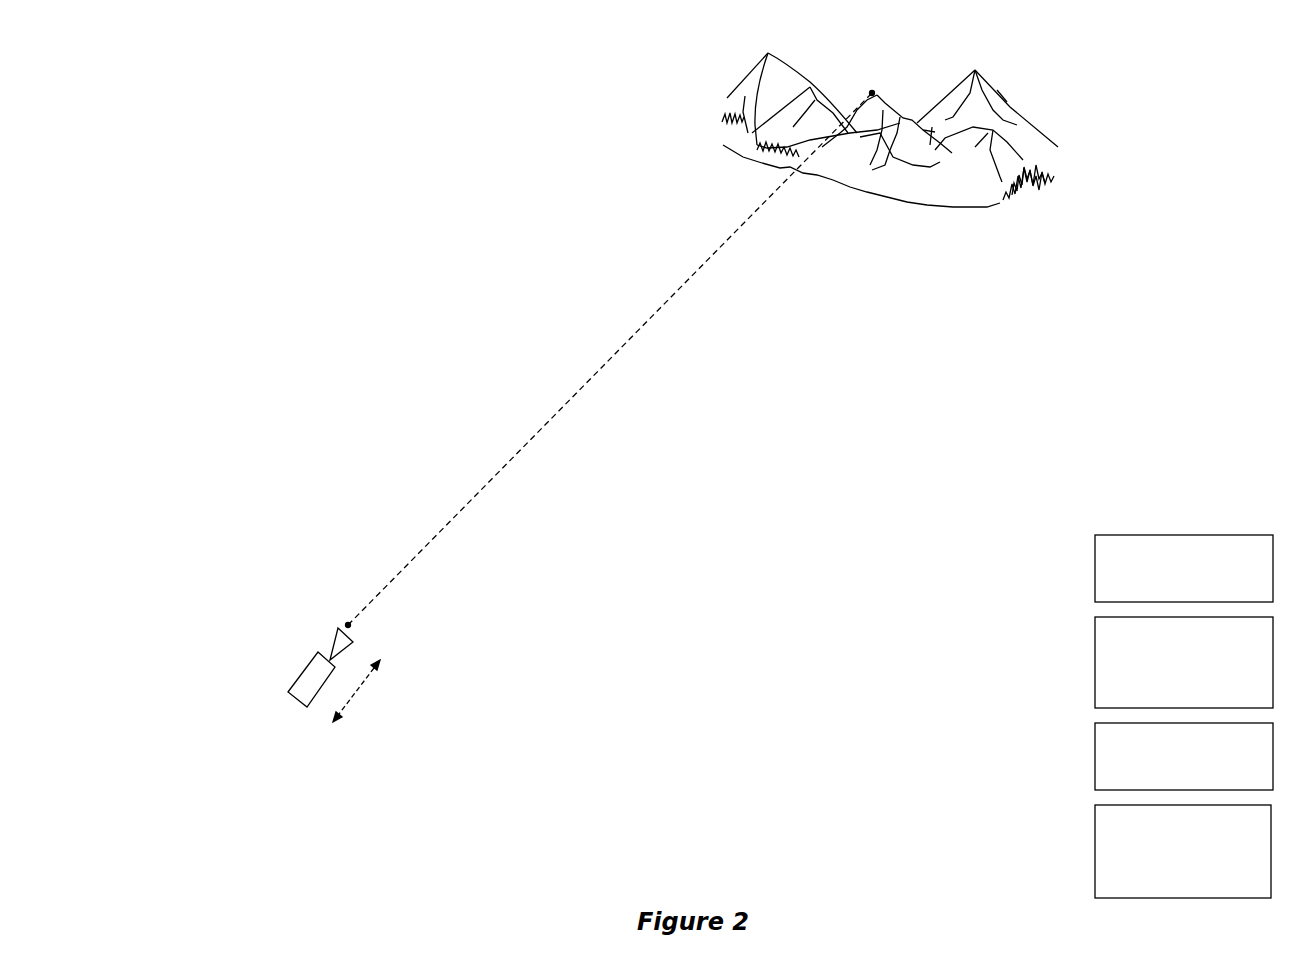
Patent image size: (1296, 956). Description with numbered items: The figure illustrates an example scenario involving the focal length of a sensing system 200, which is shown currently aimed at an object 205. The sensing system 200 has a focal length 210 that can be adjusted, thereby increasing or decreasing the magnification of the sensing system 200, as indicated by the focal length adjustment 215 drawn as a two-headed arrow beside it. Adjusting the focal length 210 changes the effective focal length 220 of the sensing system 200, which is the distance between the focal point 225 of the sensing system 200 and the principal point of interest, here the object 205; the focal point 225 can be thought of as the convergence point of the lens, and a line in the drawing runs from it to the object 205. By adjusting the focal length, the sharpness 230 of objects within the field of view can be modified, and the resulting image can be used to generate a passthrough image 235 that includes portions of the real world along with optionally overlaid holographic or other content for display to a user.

The sensing system 200 is at (289, 697).
The object 205 is at (872, 93).
The focal length 210 is at (1184, 568).
The focal length adjustment 215 is at (355, 693).
The effective focal length 220 is at (1184, 662).
The focal point 225 is at (347, 624).
The sharpness 230 is at (1184, 756).
The passthrough image 235 is at (1183, 851).